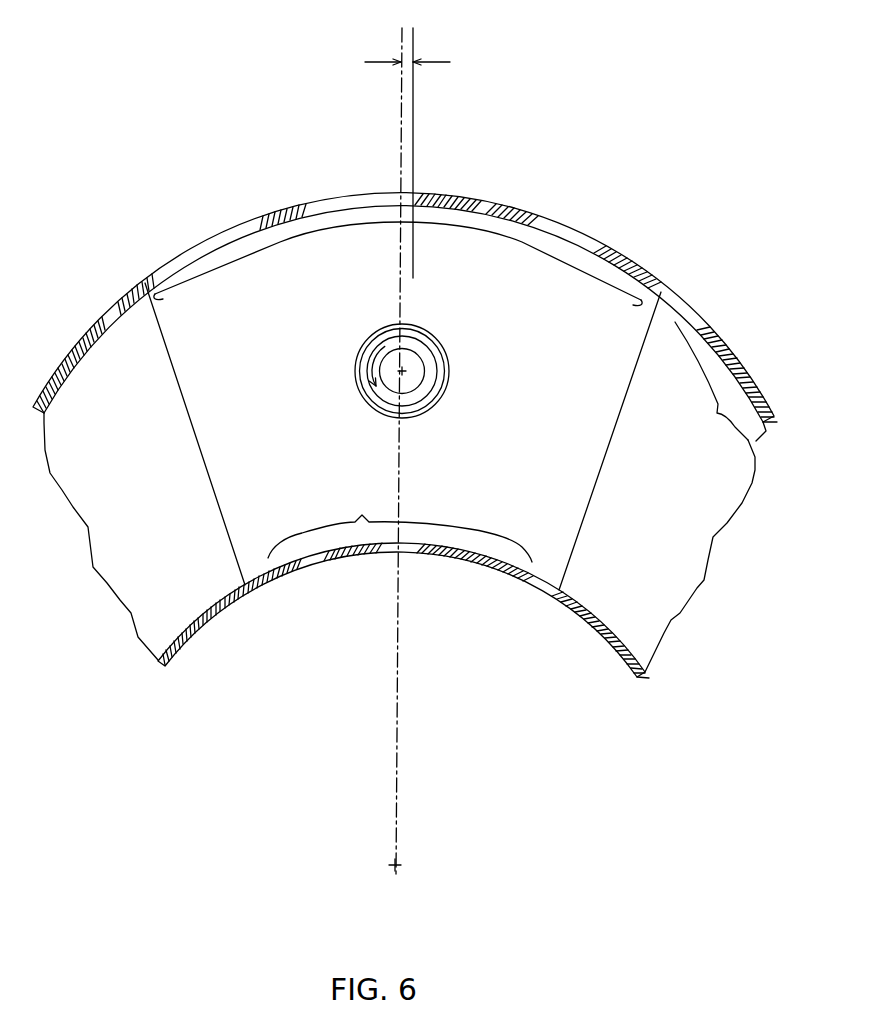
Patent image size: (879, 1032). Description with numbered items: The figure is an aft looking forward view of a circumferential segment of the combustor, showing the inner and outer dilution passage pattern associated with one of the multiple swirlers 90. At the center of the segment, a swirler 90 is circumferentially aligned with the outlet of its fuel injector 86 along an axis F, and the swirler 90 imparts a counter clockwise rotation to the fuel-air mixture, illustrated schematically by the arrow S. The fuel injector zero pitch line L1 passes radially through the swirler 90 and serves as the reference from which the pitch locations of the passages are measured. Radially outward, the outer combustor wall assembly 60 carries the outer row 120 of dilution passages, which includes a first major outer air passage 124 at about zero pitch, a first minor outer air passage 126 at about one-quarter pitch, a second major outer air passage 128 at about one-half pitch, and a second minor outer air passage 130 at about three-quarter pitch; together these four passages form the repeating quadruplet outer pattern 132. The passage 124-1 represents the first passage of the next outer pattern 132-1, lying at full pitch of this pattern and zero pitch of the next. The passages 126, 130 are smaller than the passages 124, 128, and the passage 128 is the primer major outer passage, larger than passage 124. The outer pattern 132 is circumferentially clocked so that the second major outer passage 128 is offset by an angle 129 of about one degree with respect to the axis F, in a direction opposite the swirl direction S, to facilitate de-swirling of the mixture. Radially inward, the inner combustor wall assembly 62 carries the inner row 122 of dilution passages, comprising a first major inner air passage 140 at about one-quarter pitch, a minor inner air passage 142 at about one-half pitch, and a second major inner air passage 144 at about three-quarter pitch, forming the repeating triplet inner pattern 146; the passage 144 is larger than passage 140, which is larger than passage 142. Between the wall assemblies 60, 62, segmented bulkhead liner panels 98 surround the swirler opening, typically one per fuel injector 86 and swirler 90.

The outer combustor wall assembly 60 is at (642, 268).
The inner combustor wall assembly 62 is at (573, 607).
The fuel injector 86 is at (410, 362).
The swirler 90 is at (432, 368).
The bulkhead liner panel 98 is at (168, 590).
The outer row of dilution passages 120 is at (615, 232).
The inner row of dilution passages 122 is at (298, 602).
The first major outer air passage 124 is at (177, 258).
The first major outer air passage of the next pattern 124-1 is at (705, 323).
The first minor outer air passage 126 is at (277, 212).
The second major outer air passage 128 is at (428, 192).
The angle 129 is at (437, 62).
The second minor outer air passage 130 is at (527, 210).
The outer pattern 132 is at (355, 226).
The next outer pattern 132-1 is at (717, 415).
The first major inner air passage 140 is at (308, 566).
The minor inner air passage 142 is at (413, 553).
The second major inner air passage 144 is at (498, 565).
The inner pattern 146 is at (400, 523).
The rotational direction arrow S is at (360, 353).
The axis F is at (408, 378).
The fuel injector zero pitch line L1 is at (405, 462).